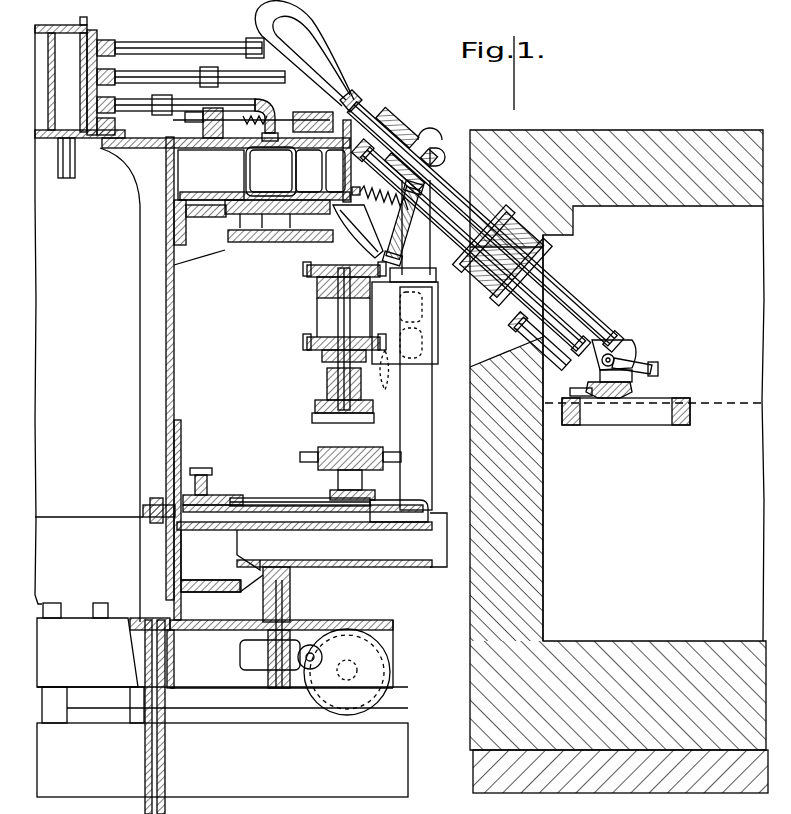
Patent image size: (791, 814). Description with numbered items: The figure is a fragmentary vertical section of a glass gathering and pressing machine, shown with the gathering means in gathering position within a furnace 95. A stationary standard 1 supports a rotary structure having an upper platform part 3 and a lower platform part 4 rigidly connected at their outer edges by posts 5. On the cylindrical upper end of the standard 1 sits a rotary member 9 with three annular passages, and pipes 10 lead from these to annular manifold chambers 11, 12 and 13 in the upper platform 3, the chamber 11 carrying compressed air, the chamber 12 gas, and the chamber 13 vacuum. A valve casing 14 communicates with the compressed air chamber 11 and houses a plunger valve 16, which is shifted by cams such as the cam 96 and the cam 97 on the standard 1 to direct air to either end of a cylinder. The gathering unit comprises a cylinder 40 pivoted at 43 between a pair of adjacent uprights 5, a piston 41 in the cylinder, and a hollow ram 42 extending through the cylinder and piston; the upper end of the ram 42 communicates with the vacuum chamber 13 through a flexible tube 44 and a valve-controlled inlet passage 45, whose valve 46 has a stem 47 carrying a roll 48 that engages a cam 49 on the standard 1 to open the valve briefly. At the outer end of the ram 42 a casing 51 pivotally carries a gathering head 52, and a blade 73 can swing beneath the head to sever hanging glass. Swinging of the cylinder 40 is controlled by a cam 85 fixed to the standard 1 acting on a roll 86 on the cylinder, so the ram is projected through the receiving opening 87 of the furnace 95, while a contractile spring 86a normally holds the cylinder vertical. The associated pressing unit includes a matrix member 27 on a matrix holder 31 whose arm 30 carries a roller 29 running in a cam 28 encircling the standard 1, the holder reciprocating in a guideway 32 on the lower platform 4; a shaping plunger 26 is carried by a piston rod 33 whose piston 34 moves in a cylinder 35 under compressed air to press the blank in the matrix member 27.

The standard 1 is at (167, 200).
The upper platform part 3 is at (167, 218).
The lower platform part 4 is at (360, 531).
The post 5 is at (418, 425).
The rotary member 9 is at (108, 42).
The pipe 10 is at (183, 80).
The compressed air chamber 11 is at (271, 171).
The gas chamber 12 is at (309, 171).
The vacuum chamber 13 is at (338, 161).
The valve casing 14 is at (258, 200).
The plunger valve 16 is at (258, 215).
The shaping plunger 26 is at (330, 408).
The matrix member 27 is at (318, 448).
The cam 28 is at (203, 474).
The roller 29 is at (228, 494).
The arm 30 is at (258, 498).
The matrix holder 31 is at (395, 470).
The guideway 32 is at (395, 502).
The piston rod 33 is at (338, 334).
The piston 34 is at (316, 290).
The cylinder 35 is at (316, 310).
The cylinder 40 is at (437, 172).
The piston 41 is at (468, 238).
The ram 42 is at (536, 293).
The pivot 43 is at (430, 132).
The flexible tube 44 is at (328, 54).
The inlet passage 45 is at (296, 114).
The valve 46 is at (344, 102).
The valve stem 47 is at (234, 142).
The roll 48 is at (210, 175).
The cam 49 is at (164, 148).
The casing 51 is at (612, 346).
The gathering head 52 is at (638, 384).
The blade 73 is at (655, 367).
The cam 85 is at (370, 242).
The roll 86 is at (400, 232).
The contractile spring 86a is at (380, 192).
The receiving opening 87 is at (536, 246).
The furnace 95 is at (618, 440).
The cam 96 is at (216, 218).
The cam 97 is at (222, 243).